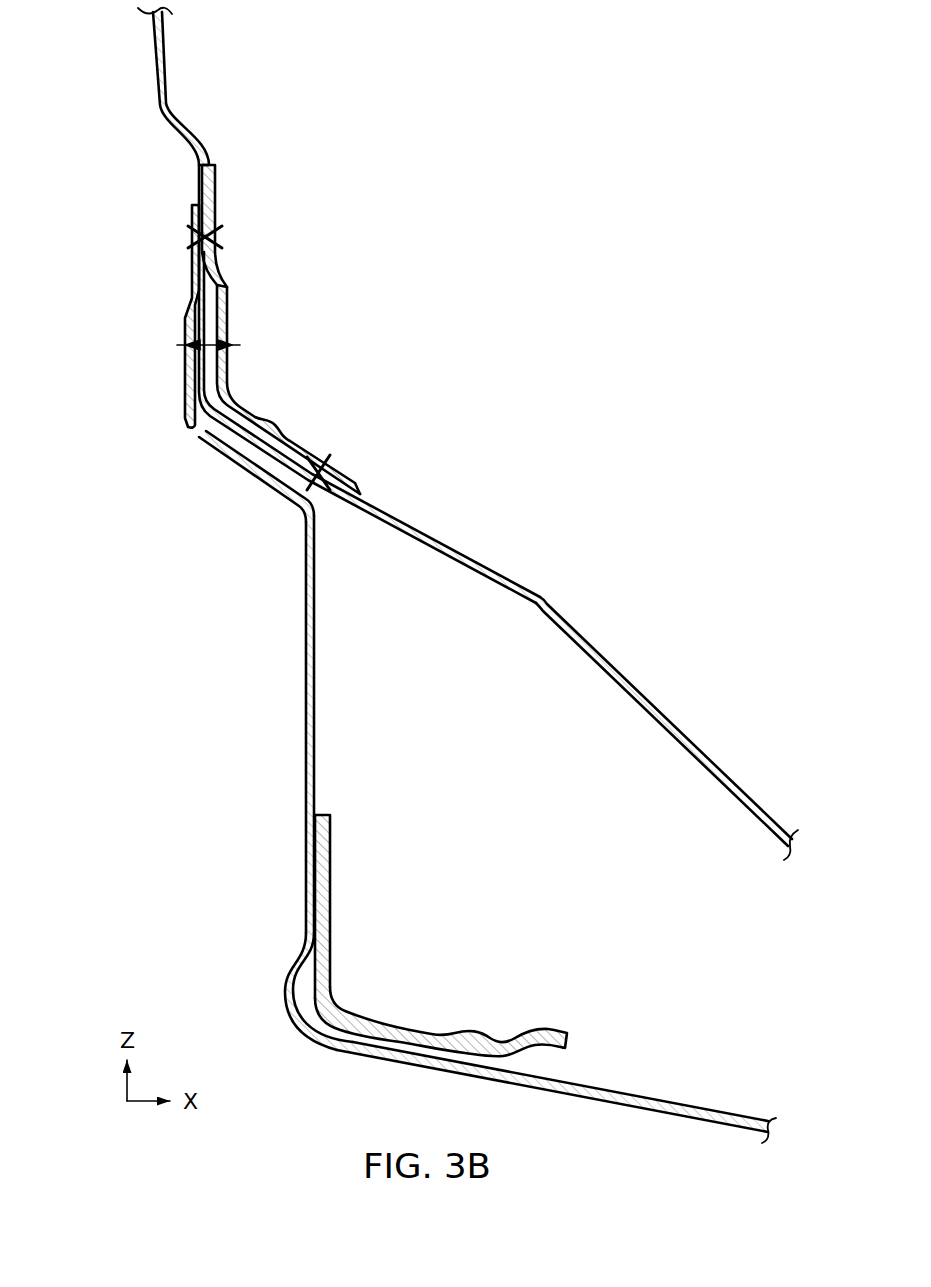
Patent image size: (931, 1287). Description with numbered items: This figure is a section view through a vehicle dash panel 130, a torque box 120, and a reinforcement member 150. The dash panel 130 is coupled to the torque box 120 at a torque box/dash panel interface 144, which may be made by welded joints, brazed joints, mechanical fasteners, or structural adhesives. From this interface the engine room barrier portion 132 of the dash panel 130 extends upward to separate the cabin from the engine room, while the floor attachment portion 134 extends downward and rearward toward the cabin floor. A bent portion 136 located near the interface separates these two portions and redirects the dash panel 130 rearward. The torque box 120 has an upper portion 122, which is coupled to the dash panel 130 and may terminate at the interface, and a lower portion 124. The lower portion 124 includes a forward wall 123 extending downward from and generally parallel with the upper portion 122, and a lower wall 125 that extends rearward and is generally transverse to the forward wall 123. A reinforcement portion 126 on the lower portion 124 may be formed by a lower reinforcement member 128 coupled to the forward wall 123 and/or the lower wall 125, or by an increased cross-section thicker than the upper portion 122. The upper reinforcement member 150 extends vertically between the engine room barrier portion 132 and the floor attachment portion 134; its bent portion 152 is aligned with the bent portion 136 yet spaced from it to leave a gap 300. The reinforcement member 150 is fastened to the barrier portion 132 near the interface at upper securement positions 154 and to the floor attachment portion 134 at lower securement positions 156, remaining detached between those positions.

The torque box 120 is at (283, 678).
The upper portion 122 is at (178, 386).
The forward wall 123 is at (320, 628).
The lower portion 124 is at (277, 1030).
The lower wall 125 is at (687, 1100).
The reinforcement portion 126 is at (345, 955).
The reinforcement member 128 is at (333, 898).
The dash panel 130 is at (515, 528).
The engine room barrier portion 132 is at (215, 133).
The floor attachment portion 134 is at (577, 620).
The bent portion 136 is at (213, 425).
The torque box/dash panel interface 144 is at (185, 231).
The reinforcement member 150 is at (276, 386).
The bent portion 152 is at (240, 375).
The upper securement positions 154 is at (172, 224).
The lower securement positions 156 is at (330, 461).
The gap 300 is at (210, 333).